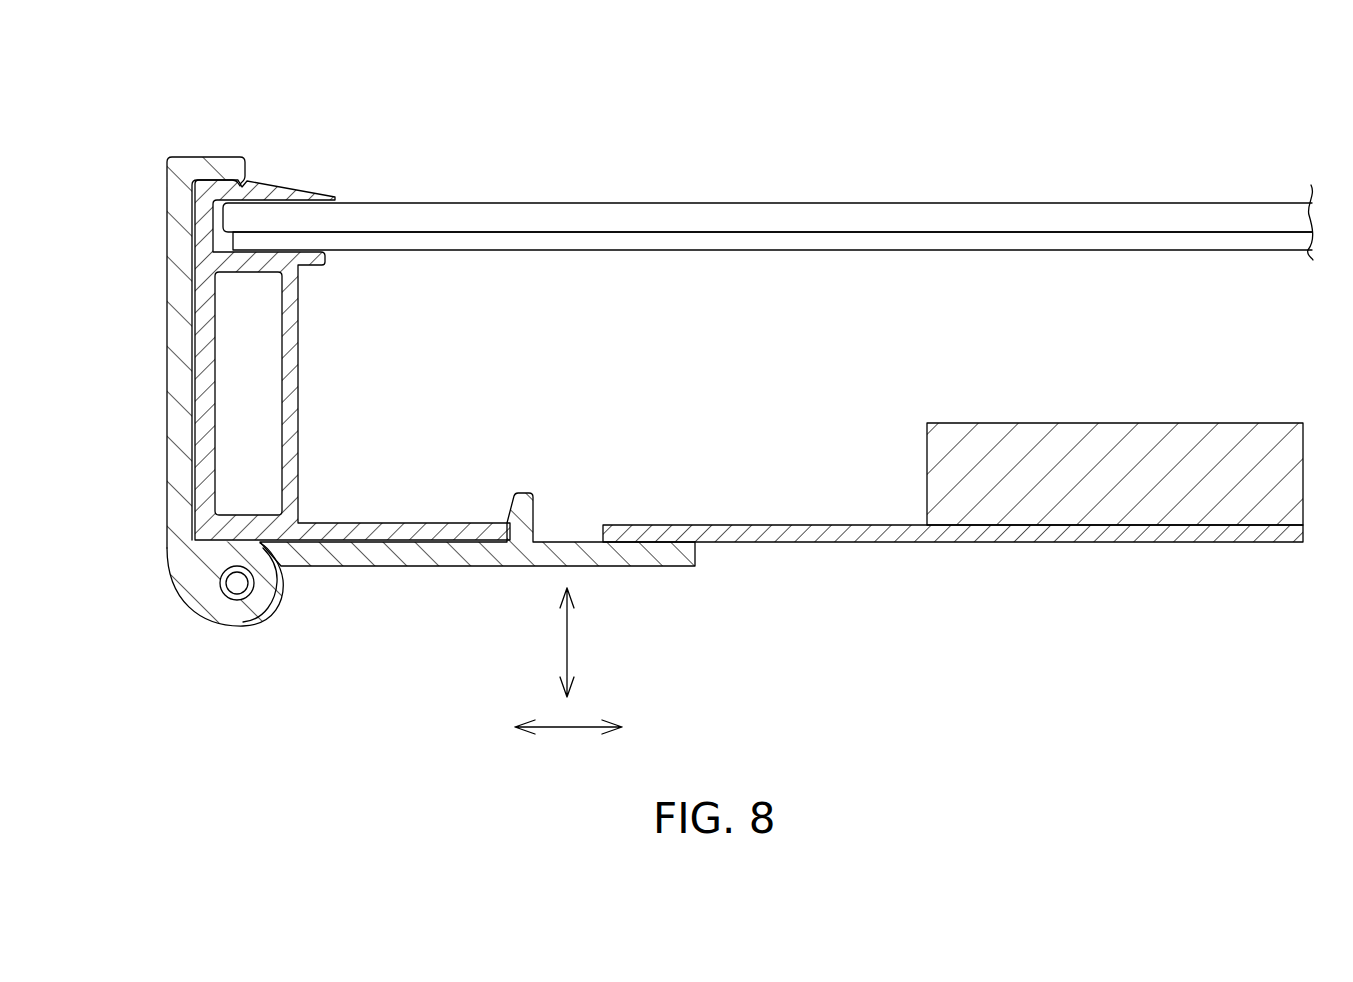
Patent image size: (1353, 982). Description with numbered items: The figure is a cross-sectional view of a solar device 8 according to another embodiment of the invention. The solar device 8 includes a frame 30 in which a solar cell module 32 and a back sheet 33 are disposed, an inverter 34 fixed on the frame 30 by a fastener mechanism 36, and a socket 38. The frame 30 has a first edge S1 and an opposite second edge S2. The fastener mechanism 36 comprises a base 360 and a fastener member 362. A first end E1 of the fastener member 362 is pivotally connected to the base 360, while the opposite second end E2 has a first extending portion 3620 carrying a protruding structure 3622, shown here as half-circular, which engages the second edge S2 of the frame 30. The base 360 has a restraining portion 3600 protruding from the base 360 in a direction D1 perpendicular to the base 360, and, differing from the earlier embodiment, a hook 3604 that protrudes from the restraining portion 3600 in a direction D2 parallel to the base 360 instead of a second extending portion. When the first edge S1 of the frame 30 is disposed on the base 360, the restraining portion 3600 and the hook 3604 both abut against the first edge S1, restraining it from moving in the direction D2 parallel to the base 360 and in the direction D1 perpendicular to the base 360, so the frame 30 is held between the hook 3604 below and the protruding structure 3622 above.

The solar device 8 is at (1140, 105).
The frame 30 is at (302, 387).
The solar cell module 32 is at (700, 215).
The back sheet 33 is at (880, 244).
The inverter 34 is at (1046, 430).
The fastener mechanism 36 is at (137, 570).
The socket 38 is at (808, 544).
The base 360 is at (427, 568).
The fastener member 362 is at (167, 328).
The restraining portion 3600 is at (536, 522).
The hook 3604 is at (505, 518).
The first extending portion 3620 is at (225, 157).
The protruding structure 3622 is at (250, 182).
The first edge S1 is at (360, 528).
The second edge S2 is at (275, 191).
The direction perpendicular to the base D1 is at (584, 642).
The direction parallel to the base D2 is at (568, 741).
The first end E1 is at (215, 627).
The second end E2 is at (190, 152).